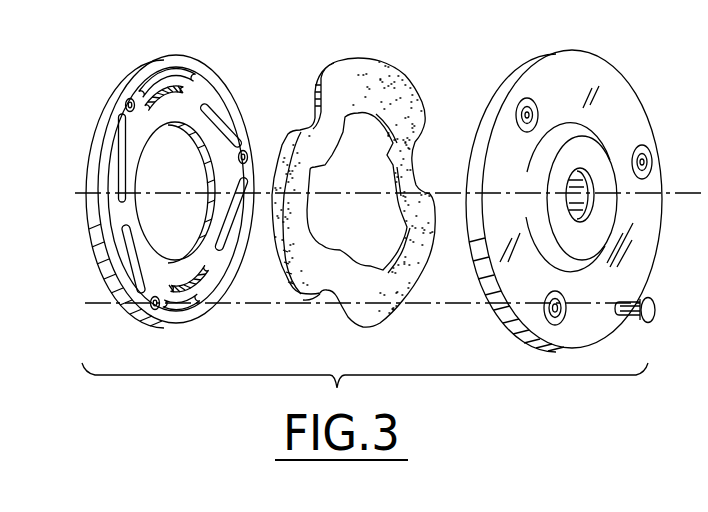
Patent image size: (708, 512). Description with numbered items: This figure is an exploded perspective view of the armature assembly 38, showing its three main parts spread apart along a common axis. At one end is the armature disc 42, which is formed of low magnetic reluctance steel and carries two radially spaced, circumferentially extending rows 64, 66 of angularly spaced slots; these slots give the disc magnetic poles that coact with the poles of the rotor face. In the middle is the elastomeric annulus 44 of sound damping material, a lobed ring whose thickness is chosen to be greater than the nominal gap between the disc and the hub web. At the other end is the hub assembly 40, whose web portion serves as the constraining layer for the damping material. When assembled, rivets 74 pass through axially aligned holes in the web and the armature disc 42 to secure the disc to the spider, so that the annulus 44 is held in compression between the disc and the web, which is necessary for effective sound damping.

The armature assembly 38 is at (407, 33).
The hub assembly 40 is at (658, 102).
The armature disc 42 is at (235, 66).
The elastomeric annulus 44 is at (428, 100).
The row of slots 64 is at (183, 77).
The row of slots 66 is at (143, 117).
The rivets 74 is at (655, 306).